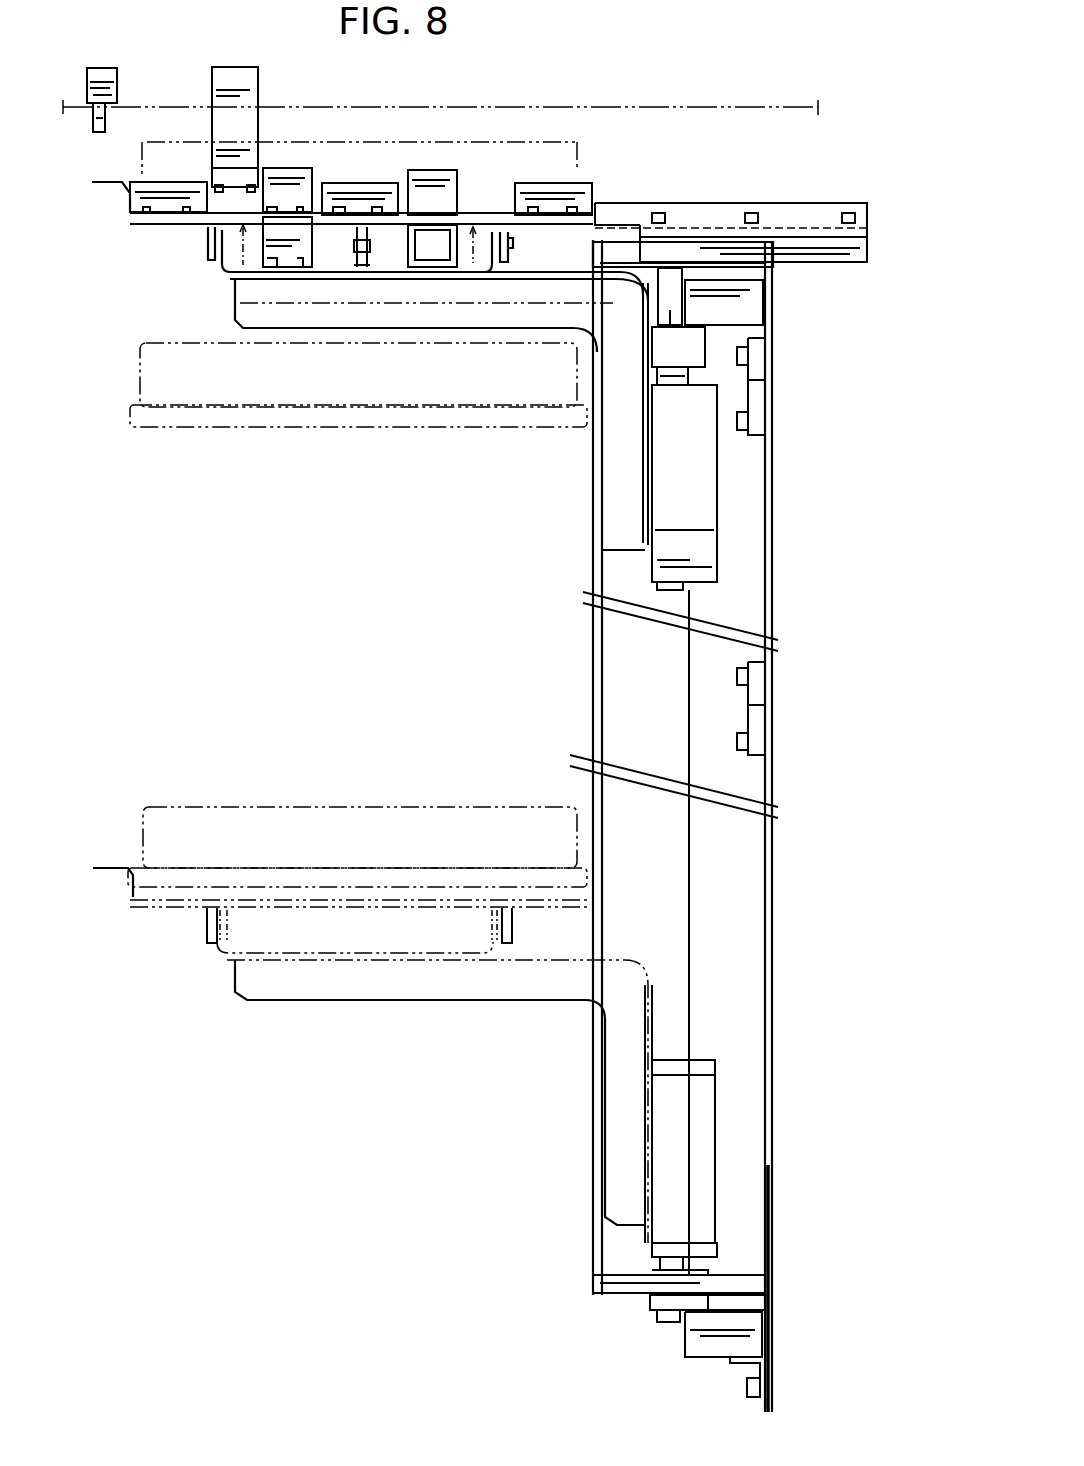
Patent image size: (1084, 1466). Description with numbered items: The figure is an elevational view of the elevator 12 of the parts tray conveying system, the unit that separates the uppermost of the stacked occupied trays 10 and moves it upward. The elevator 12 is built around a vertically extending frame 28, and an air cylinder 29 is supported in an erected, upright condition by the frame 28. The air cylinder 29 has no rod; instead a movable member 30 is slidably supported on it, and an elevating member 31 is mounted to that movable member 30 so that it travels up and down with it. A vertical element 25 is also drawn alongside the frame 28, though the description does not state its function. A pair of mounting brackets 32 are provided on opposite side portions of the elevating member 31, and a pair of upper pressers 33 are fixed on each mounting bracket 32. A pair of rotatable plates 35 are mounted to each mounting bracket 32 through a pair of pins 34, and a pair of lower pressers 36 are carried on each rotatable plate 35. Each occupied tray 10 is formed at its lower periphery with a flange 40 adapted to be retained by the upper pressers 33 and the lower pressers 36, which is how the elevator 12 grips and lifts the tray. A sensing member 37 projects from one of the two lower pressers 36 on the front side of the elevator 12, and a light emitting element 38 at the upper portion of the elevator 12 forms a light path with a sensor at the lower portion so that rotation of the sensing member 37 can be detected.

The occupied tray 10 is at (155, 342).
The elevator 12 is at (722, 103).
The vertical support post 25 is at (598, 676).
The frame 28 is at (772, 612).
The air cylinder 29 is at (700, 882).
The movable member 30 is at (700, 510).
The elevating member 31 is at (483, 317).
The mounting bracket 32 is at (342, 282).
The upper presser 33 is at (297, 168).
The pin 34 is at (210, 240).
The rotatable plate 35 is at (393, 213).
The lower presser 36 is at (183, 185).
The sensing member 37 is at (100, 187).
The light emitting element 38 is at (100, 125).
The flange 40 is at (125, 415).